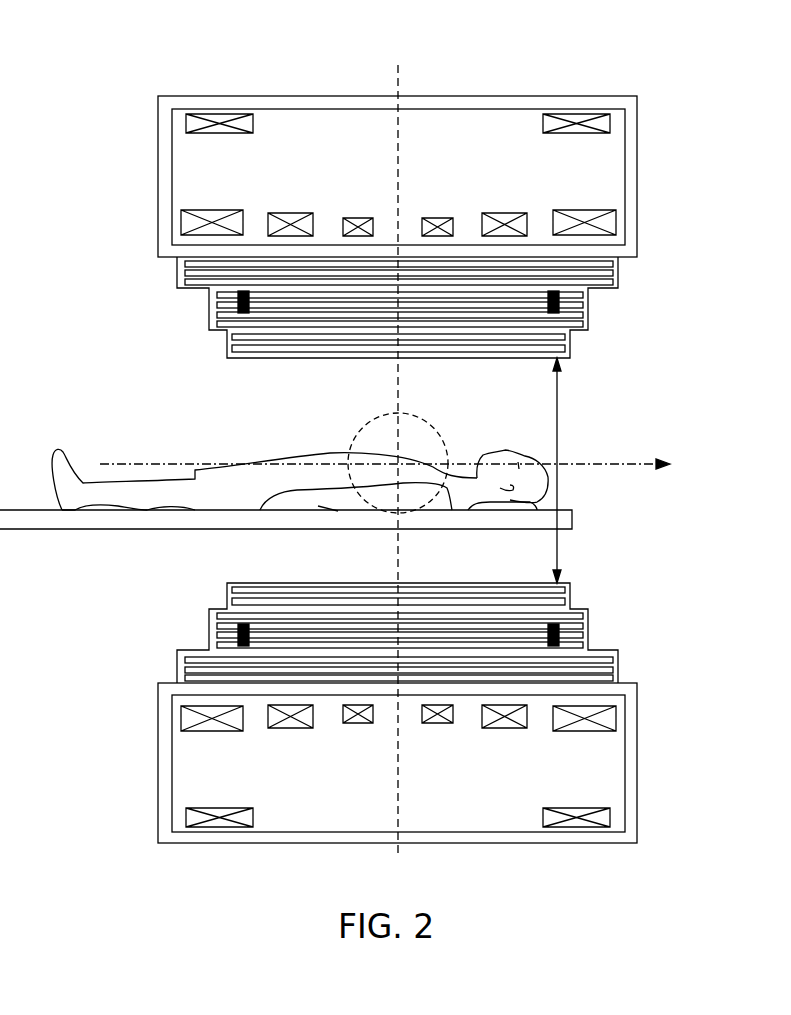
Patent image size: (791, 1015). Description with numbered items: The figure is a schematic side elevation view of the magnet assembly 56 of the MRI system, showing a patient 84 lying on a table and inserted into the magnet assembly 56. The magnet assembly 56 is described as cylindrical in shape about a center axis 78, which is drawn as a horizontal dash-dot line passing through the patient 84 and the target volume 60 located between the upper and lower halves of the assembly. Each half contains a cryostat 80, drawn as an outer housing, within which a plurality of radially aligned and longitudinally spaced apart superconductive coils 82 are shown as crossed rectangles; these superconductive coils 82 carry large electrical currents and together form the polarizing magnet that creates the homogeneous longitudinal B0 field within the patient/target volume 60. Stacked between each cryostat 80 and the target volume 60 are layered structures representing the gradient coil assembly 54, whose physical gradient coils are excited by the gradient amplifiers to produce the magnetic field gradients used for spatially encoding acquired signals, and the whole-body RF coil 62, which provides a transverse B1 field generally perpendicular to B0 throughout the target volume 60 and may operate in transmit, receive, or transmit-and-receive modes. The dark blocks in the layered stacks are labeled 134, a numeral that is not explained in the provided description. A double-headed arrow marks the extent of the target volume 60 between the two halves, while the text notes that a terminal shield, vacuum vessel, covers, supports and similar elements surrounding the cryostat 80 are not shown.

The magnet assembly 56 is at (593, 65).
The cryostat 80 is at (495, 96).
The superconductive coils 82 is at (585, 210).
The gradient coil assembly 54 is at (588, 322).
The superconducting magnet coils 134 is at (238, 298).
The RF coil 62 is at (227, 341).
The target volume 60 is at (558, 428).
The center axis 78 is at (620, 467).
The patient 84 is at (92, 498).